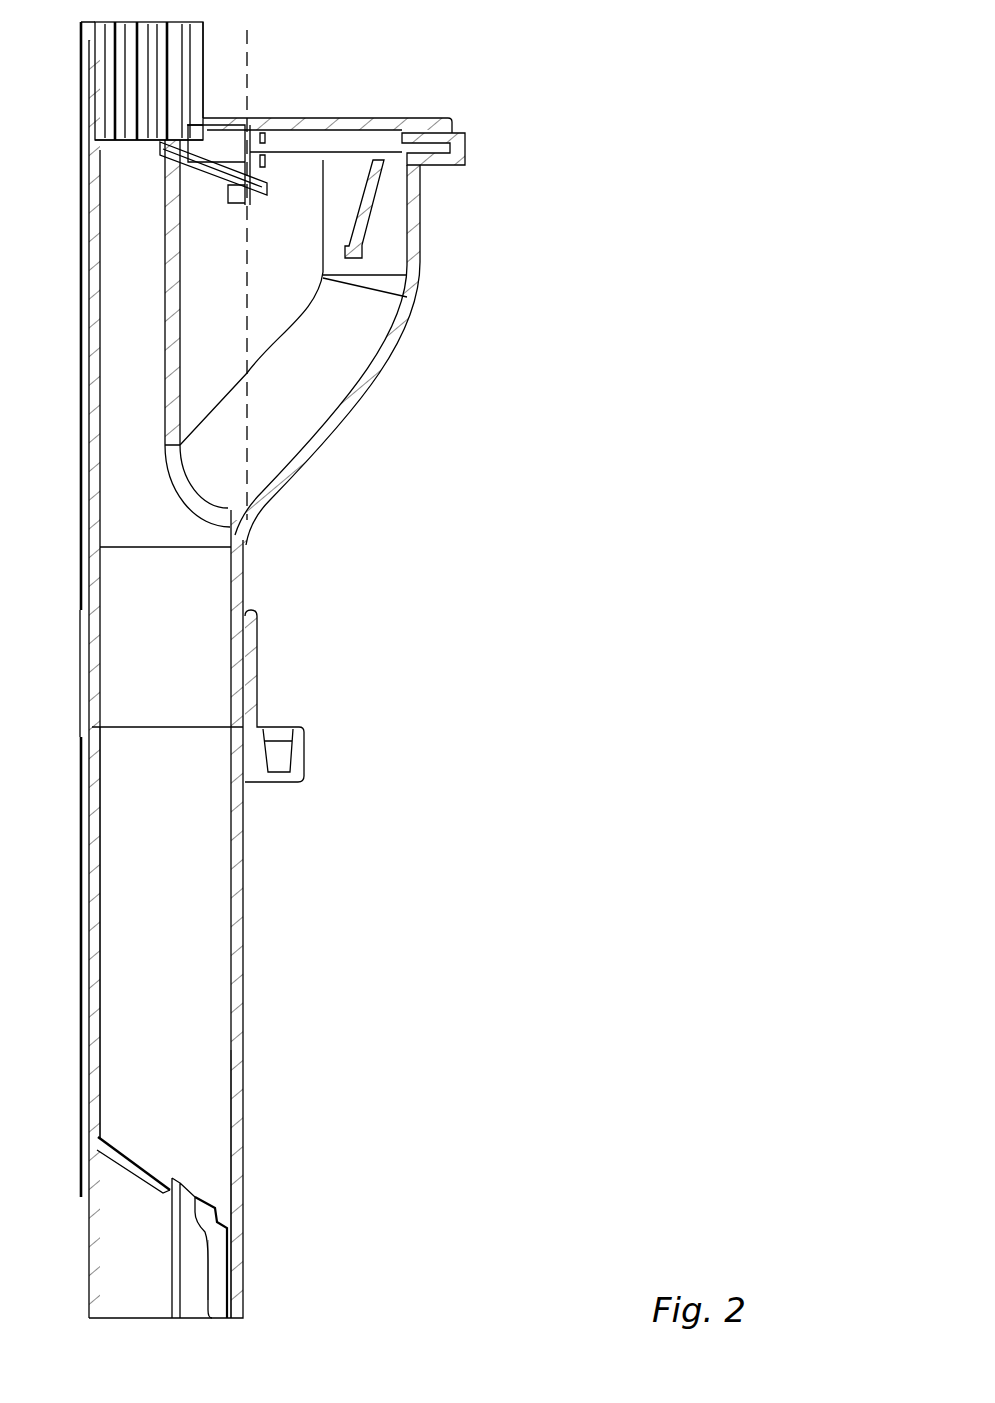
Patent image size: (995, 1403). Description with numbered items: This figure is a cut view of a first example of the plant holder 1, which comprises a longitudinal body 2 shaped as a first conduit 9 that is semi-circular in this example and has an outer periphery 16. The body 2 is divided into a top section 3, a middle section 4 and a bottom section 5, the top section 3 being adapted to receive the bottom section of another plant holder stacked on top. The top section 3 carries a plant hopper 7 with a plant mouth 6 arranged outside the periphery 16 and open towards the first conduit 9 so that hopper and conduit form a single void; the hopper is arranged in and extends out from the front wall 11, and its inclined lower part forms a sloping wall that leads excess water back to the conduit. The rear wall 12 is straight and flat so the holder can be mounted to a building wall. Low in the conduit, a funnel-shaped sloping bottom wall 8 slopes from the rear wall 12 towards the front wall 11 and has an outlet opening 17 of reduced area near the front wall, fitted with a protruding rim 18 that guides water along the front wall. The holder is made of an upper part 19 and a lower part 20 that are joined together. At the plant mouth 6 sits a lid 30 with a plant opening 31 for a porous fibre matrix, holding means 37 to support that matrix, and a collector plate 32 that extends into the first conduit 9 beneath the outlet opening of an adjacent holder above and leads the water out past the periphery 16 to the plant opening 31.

The plant holder 1 is at (368, 667).
The longitudinal body 2 is at (243, 795).
The top section 3 is at (385, 278).
The middle section 4 is at (404, 710).
The bottom section 5 is at (273, 1186).
The plant mouth 6 is at (419, 95).
The plant hopper 7 is at (337, 370).
The sloping bottom wall 8 is at (145, 1172).
The first conduit 9 is at (195, 882).
The front wall 11 is at (237, 1150).
The rear wall 12 is at (94, 1083).
The outer periphery 16 is at (248, 412).
The outlet opening 17 is at (222, 1188).
The protruding rim 18 is at (197, 1186).
The upper part 19 is at (380, 502).
The lower part 20 is at (288, 964).
The lid 30 is at (457, 133).
The plant opening 31 is at (372, 96).
The collector plate 32 is at (207, 177).
The holding means 37 is at (362, 242).